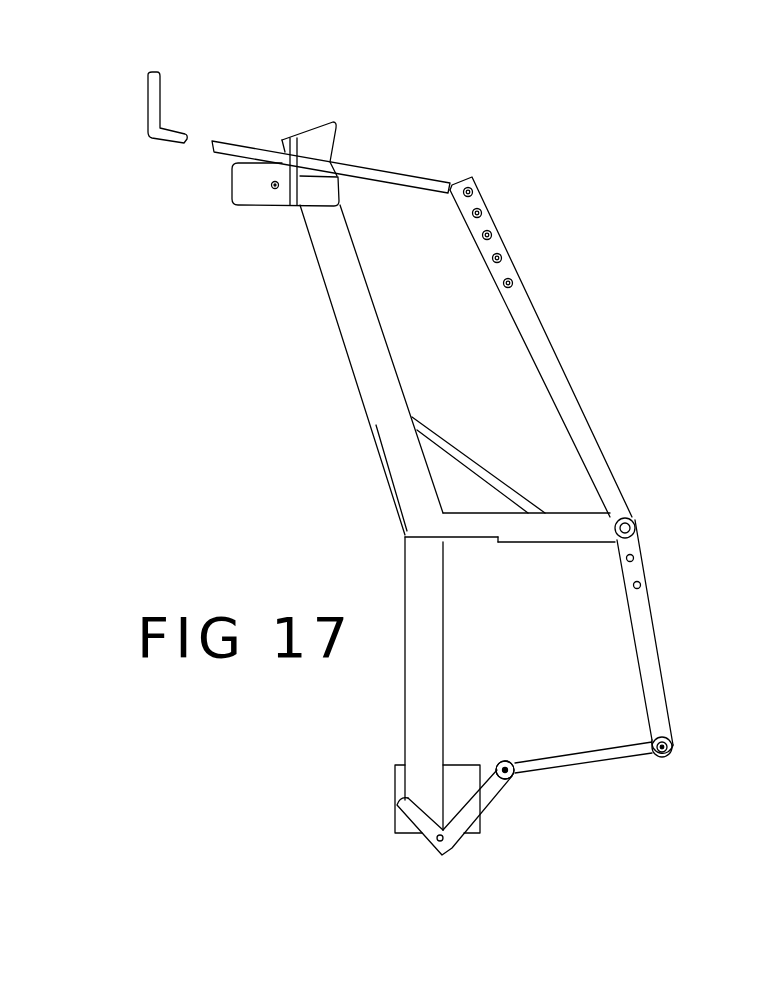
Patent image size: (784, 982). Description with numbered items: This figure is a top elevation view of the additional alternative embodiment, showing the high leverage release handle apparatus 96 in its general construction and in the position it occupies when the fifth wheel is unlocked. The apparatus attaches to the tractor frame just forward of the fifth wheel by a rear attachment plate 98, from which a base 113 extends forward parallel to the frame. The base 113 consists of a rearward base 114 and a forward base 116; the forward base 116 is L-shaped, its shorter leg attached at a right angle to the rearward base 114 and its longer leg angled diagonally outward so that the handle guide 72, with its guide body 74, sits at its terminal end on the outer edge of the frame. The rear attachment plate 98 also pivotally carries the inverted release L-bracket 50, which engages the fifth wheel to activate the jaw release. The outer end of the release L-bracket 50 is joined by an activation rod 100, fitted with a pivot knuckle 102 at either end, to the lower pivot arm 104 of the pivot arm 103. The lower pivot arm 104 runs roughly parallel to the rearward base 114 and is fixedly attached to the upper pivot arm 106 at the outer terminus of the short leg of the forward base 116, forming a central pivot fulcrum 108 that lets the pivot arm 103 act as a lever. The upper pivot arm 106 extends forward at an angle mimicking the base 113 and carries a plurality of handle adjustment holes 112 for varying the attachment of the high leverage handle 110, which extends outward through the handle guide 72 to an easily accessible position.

The release L-bracket 50 is at (487, 805).
The handle guide 72 is at (285, 133).
The guide body 74 is at (285, 203).
The high leverage release handle apparatus 96 is at (314, 460).
The rear attachment plate 98 is at (396, 787).
The activation rod 100 is at (588, 765).
The pivot knuckle 102 is at (650, 743).
The pivot arm 103 is at (613, 419).
The lower pivot arm 104 is at (630, 645).
The upper pivot arm 106 is at (575, 364).
The central pivot fulcrum 108 is at (633, 517).
The high leverage handle 110 is at (399, 162).
The handle adjustment holes 112 is at (497, 233).
The base 113 is at (365, 716).
The rearward base 114 is at (452, 603).
The forward base 116 is at (338, 332).